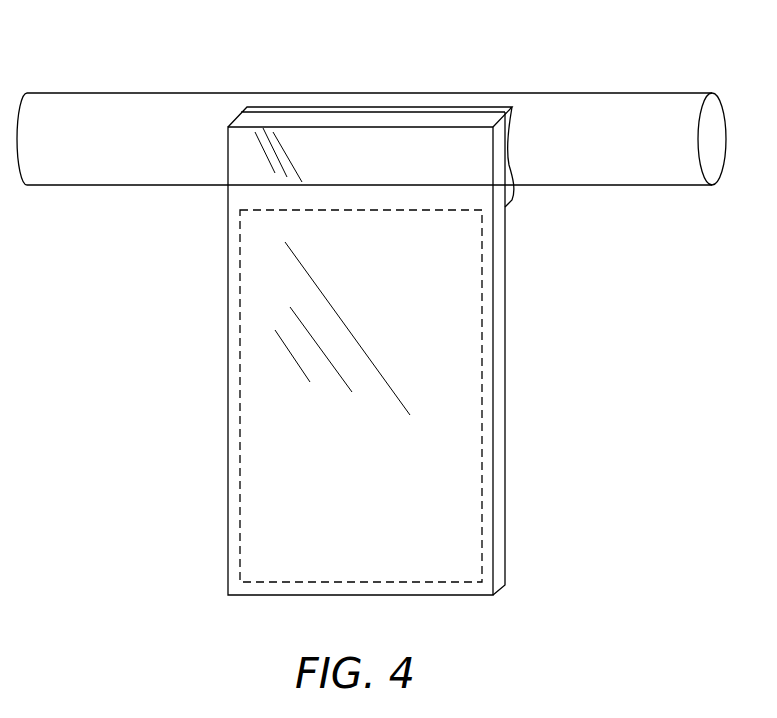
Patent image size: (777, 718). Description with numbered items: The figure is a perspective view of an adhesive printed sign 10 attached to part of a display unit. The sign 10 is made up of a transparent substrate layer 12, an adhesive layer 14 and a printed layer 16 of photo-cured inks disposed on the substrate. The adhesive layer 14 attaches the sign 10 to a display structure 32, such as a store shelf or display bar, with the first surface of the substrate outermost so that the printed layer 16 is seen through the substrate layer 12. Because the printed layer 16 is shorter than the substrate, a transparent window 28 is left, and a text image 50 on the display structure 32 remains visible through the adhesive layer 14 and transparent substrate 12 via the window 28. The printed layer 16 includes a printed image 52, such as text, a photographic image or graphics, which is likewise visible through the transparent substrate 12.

The adhesive printed sign 10 is at (174, 349).
The substrate layer 12 is at (470, 378).
The adhesive layer 14 is at (508, 162).
The printed layer 16 is at (490, 273).
The transparent window 28 is at (402, 137).
The display structure 32 is at (105, 93).
The text image 50 is at (148, 167).
The printed image 52 is at (295, 464).